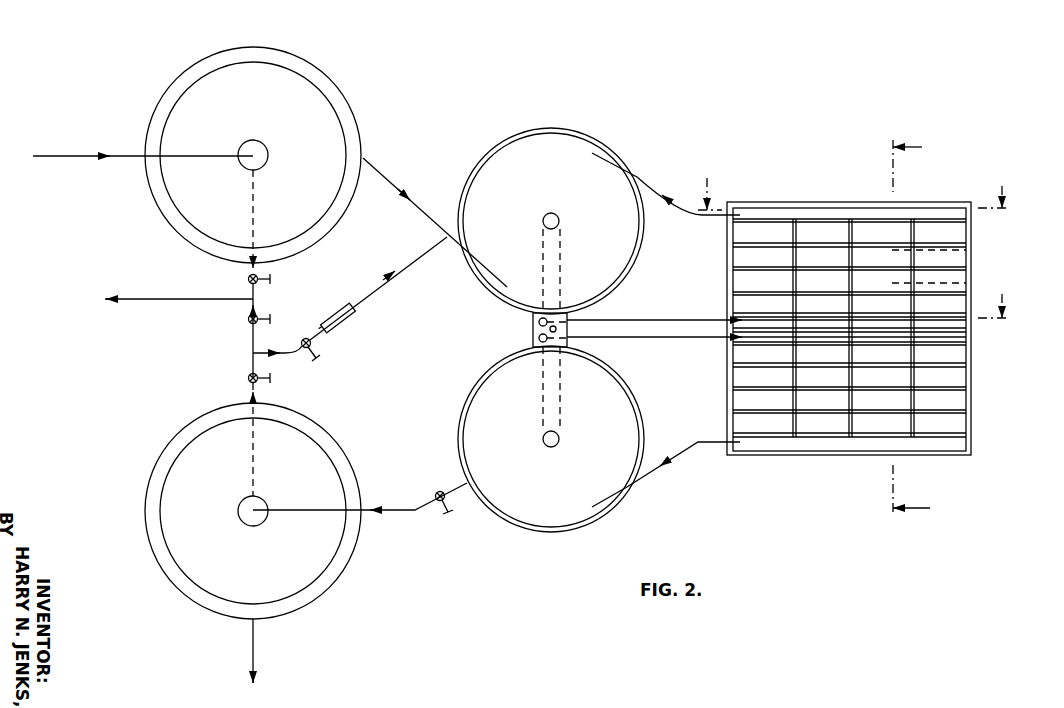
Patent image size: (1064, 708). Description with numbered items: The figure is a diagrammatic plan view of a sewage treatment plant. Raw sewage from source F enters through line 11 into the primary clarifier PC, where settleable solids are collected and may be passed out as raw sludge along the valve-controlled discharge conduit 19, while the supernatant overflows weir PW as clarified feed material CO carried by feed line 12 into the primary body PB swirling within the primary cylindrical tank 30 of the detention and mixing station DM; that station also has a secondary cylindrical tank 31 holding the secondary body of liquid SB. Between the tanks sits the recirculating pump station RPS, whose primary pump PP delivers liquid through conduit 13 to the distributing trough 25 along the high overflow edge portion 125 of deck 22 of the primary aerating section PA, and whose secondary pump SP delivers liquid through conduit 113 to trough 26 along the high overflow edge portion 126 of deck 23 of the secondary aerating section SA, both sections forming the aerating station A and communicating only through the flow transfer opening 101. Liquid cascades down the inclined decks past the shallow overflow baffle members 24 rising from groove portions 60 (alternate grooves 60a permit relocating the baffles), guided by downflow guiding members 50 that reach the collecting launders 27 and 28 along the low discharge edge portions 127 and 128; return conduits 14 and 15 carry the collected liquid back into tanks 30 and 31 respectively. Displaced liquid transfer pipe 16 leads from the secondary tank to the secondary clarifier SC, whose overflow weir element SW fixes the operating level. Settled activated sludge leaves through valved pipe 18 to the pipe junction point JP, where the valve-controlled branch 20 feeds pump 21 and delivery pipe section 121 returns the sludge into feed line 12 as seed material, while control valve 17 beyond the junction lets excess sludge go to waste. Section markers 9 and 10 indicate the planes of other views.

The source F is at (40, 156).
The line 11 is at (92, 155).
The weir PW is at (312, 82).
The primary clarifier PC is at (238, 77).
The overflow weir element SW is at (322, 560).
The secondary clarifier SC is at (185, 558).
The primary body PB is at (551, 221).
The secondary body of liquid SB is at (551, 439).
The primary cylindrical tank 30 is at (492, 150).
The secondary cylindrical tank 31 is at (508, 522).
The clarified feed material CO is at (378, 172).
The feed line 12 is at (425, 212).
The delivery pipe section 121 is at (398, 266).
The pump 21 is at (328, 310).
The valve-controlled branch line 20 is at (314, 344).
The raw sludge discharge conduit 19 is at (168, 299).
The pipe junction point JP is at (241, 274).
The activated sludge transfer pipe 18 is at (246, 387).
The displaced liquid transfer pipe 16 is at (418, 512).
The control valve 17 is at (258, 632).
The recirculating pump station RPS is at (538, 321).
The primary pump PP is at (547, 318).
The secondary pump SP is at (548, 341).
The section line 9 is at (520, 320).
The detention and mixing station DM is at (470, 317).
The pump flow delivery conduit 13 is at (624, 322).
The pump flow delivery conduit 113 is at (622, 340).
The flow return conduit 14 is at (655, 190).
The flow return conduit 15 is at (678, 455).
The aeration tank / section line 10 is at (854, 305).
The downflow guiding members 50 is at (847, 216).
The deck 23 is at (853, 238).
The liquid collecting launder 27 is at (800, 212).
The liquid collecting launder 28 is at (795, 456).
The deck 22 is at (820, 277).
The overflow baffle members 24 is at (808, 246).
The groove portions 60 is at (742, 273).
The grooved portions 60a is at (960, 282).
The liquid distributing trough 25 is at (742, 301).
The liquid receiving and distributing trough 26 is at (742, 355).
The high overflow edge portion 125 is at (864, 318).
The high overflow edge portion 126 is at (868, 358).
The low discharge edge portion 127 is at (886, 230).
The low discharge edge portion 128 is at (866, 440).
The flow transfer opening 101 is at (958, 332).
The primary aerating section PA is at (978, 270).
The secondary aerating section SA is at (975, 386).
The aerating station A is at (1023, 290).